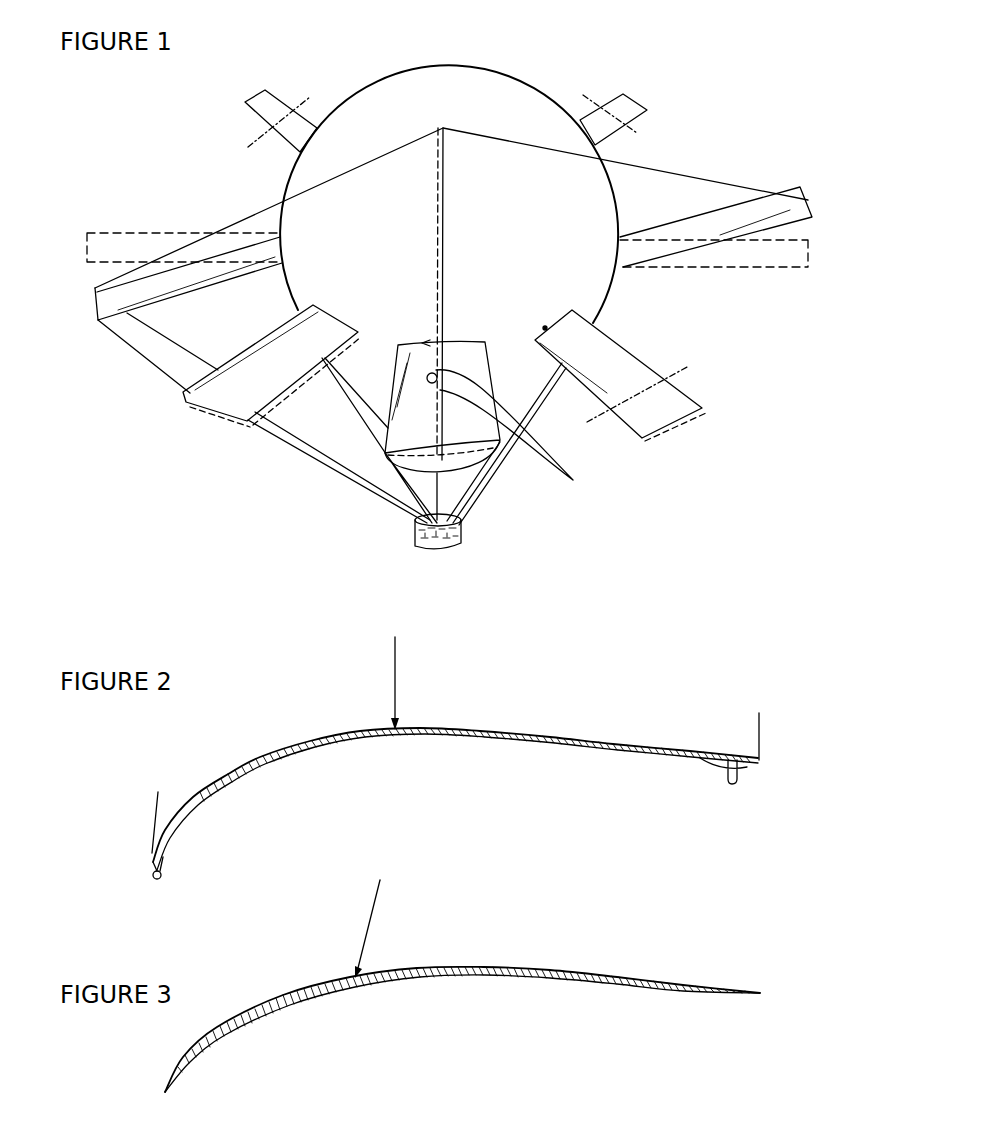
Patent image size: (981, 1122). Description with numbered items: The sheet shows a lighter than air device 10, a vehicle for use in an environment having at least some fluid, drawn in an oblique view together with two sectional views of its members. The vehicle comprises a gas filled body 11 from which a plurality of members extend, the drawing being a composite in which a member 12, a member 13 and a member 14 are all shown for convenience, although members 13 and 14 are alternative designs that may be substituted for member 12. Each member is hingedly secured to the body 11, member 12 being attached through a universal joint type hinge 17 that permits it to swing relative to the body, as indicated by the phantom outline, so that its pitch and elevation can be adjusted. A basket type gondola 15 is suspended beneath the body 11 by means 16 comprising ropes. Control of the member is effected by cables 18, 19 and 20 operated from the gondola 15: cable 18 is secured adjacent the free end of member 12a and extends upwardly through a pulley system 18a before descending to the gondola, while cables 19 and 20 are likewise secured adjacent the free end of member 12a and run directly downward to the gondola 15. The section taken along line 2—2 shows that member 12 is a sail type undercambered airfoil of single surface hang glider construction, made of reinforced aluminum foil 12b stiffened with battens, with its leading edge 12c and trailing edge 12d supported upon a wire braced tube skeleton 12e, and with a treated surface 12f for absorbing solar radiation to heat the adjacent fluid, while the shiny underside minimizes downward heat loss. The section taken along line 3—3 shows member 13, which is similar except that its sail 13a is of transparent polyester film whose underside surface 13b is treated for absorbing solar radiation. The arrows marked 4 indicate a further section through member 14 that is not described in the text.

In FIG. 1, the lighter than air device 10 is at (134, 206).
In FIG. 1, the gas filled body 11 is at (515, 98).
In FIG. 1, the member 12 is at (622, 362).
In FIG. 1, the free end of member 12a is at (403, 422).
In FIG. 2, the reinforced aluminum foil 12b is at (485, 737).
In FIG. 2, the leading edge 12c is at (150, 800).
In FIG. 2, the trailing edge 12d is at (765, 723).
In FIG. 2, the wire braced tube skeleton 12e is at (162, 878).
In FIG. 2, the treated surface 12f is at (350, 737).
In FIG. 1, the member 13 is at (273, 143).
In FIG. 3, the sail 13a is at (677, 980).
In FIG. 3, the underside surface 13b is at (390, 982).
In FIG. 1, the member 14 is at (635, 107).
In FIG. 1, the gondola 15 is at (458, 548).
In FIG. 1, the means 16 is at (348, 395).
In FIG. 1, the universal joint type hinge 17 is at (548, 328).
In FIG. 1, the cable 18 is at (437, 493).
In FIG. 1, the pulley system 18a is at (437, 122).
In FIG. 1, the cable 19 is at (415, 490).
In FIG. 1, the cable 20 is at (455, 513).
In FIG. 1, the line 2— 2 is at (670, 363).
In FIG. 1, the line 3— 3 is at (306, 93).
In FIG. 1, the section line 4- 4 is at (582, 95).